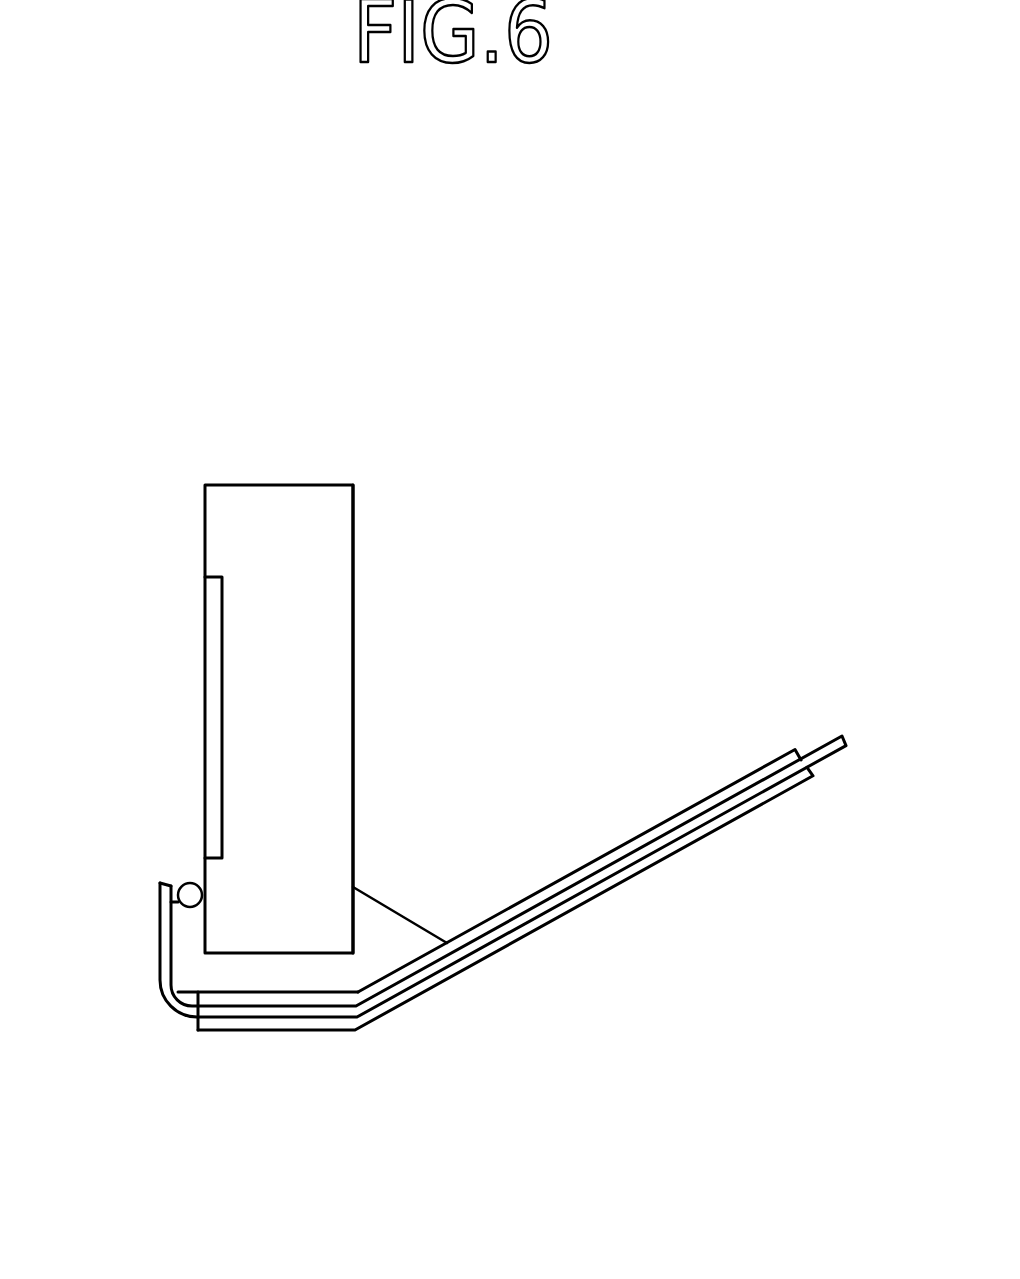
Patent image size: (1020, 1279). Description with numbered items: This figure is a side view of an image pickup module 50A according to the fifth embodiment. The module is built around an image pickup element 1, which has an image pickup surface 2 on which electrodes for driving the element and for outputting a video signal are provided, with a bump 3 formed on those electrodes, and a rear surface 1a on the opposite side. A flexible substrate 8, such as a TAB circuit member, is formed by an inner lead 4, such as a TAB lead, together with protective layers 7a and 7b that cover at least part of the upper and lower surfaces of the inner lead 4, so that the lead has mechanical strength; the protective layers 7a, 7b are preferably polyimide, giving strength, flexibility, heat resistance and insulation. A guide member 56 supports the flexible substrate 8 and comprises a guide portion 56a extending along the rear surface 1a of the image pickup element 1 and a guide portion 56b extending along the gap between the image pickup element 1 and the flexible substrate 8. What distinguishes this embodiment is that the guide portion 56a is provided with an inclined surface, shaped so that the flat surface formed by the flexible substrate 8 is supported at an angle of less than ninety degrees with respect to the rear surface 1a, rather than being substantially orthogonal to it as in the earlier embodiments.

The image pickup module 50A is at (663, 395).
The image pickup element 1 is at (235, 515).
The rear surface 1a is at (357, 528).
The image pickup surface 2 is at (205, 653).
The bump 3 is at (187, 881).
The inner lead 4 is at (160, 966).
The protective layer 7a is at (560, 880).
The protective layer 7b is at (595, 898).
The flexible substrate 8 is at (842, 715).
The guide member 56 is at (418, 1140).
The guide portion 56a is at (397, 943).
The guide portion 56b is at (258, 970).